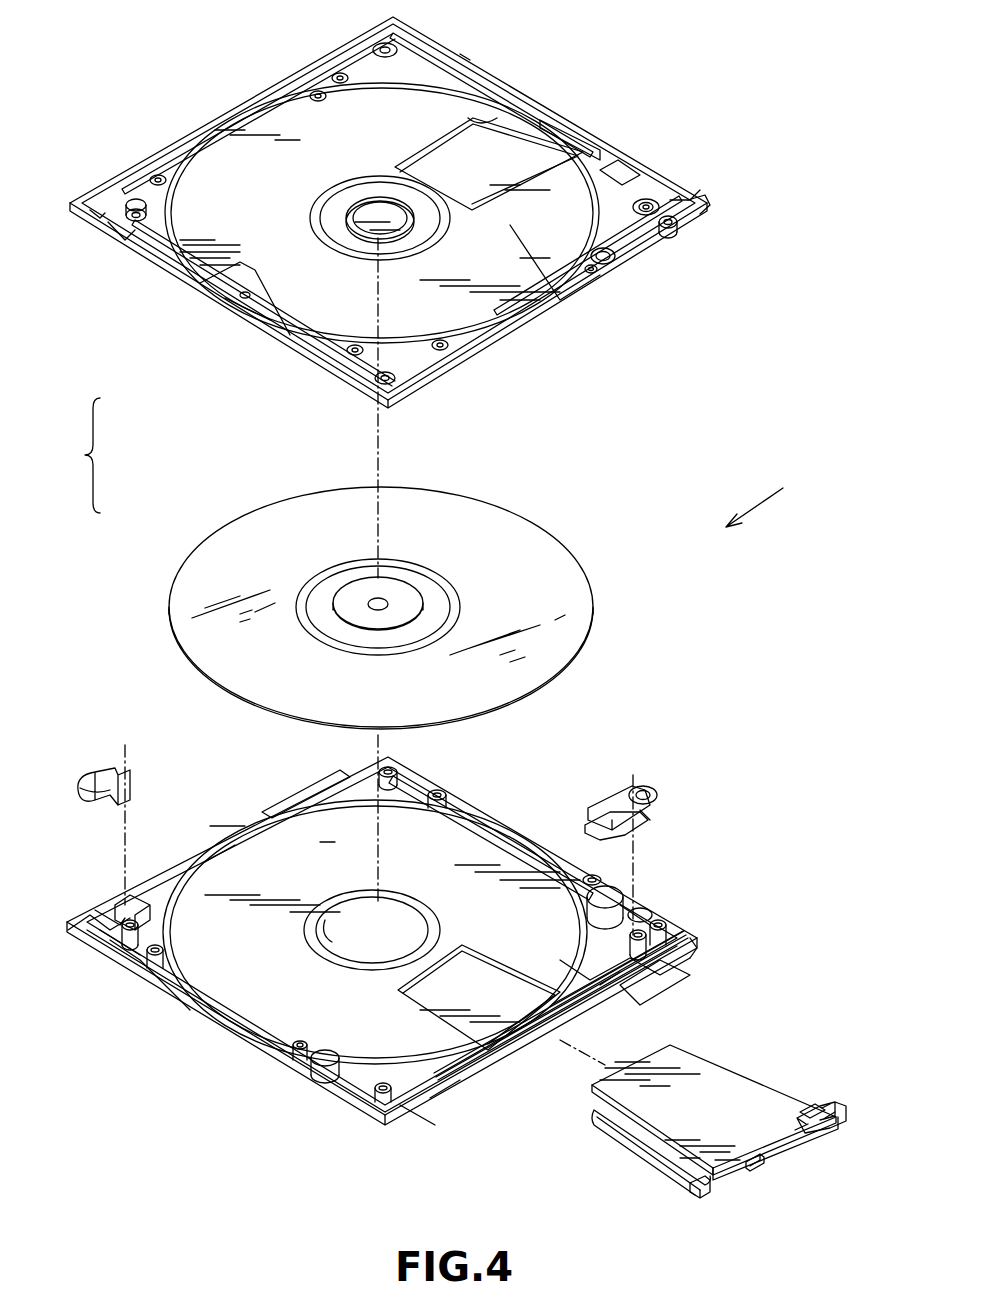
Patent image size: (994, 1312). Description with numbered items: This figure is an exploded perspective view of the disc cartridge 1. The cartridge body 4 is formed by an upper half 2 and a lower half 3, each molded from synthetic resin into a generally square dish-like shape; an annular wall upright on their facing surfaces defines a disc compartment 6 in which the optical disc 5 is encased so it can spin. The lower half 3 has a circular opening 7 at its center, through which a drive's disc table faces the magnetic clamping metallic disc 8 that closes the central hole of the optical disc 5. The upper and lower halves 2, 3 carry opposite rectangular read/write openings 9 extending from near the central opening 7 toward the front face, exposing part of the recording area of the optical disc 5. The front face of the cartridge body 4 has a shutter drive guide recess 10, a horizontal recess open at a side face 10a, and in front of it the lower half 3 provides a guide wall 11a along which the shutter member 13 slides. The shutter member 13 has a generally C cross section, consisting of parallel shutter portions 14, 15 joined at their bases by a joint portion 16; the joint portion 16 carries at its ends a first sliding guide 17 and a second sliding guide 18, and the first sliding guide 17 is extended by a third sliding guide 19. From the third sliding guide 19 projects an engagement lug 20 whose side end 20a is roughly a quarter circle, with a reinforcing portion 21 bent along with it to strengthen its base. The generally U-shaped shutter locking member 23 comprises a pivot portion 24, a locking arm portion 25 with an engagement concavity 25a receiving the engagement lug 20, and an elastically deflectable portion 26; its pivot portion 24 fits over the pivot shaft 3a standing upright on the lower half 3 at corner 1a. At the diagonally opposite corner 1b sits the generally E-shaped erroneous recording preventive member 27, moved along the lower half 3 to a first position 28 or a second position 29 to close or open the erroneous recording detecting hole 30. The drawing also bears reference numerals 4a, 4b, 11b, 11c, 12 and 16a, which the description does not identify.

The disc cartridge 1 is at (808, 484).
The corner 1a is at (637, 912).
The corner 1b is at (123, 952).
The upper half 2 is at (160, 277).
The lower half 3 is at (190, 862).
The pivot shaft 3a is at (672, 962).
The cartridge body 4 is at (76, 467).
The upper wall of cartridge body 4a is at (462, 52).
The lower wall of cartridge body 4b is at (448, 1100).
The optical disc 5 is at (590, 592).
The disc compartment 6 is at (248, 292).
The circular opening 7 is at (322, 938).
The magnetic clamping metallic disc 8 is at (415, 598).
The read/write openings 9 is at (482, 135).
The shutter drive guide recess 10 is at (703, 198).
The side face 10a is at (695, 945).
The guide wall 11a is at (597, 1006).
The shutter guide groove 11b is at (530, 1030).
The shutter guide groove 11c is at (422, 1116).
The shutter guide 12 is at (562, 148).
The shutter member 13 is at (807, 1215).
The shutter portion 14 is at (694, 1046).
The shutter portion 15 is at (630, 1135).
The joint portion 16 is at (730, 1178).
The engagement hole 16a is at (748, 1158).
The first sliding guide 17 is at (803, 1138).
The second sliding guide 18 is at (705, 1192).
The third sliding guide 19 is at (830, 1122).
The engagement lug 20 is at (841, 1102).
The side end 20a is at (826, 1103).
The reinforcing portion 21 is at (812, 1110).
The shutter locking member 23 is at (642, 792).
The pivot portion 24 is at (655, 806).
The locking arm portion 25 is at (622, 838).
The engagement concavity 25a is at (648, 826).
The elastically deflectable portion 26 is at (603, 803).
The erroneous recording preventive member 27 is at (100, 772).
The first position 28 is at (104, 924).
The second position 29 is at (140, 955).
The erroneous recording detecting hole 30 is at (116, 234).